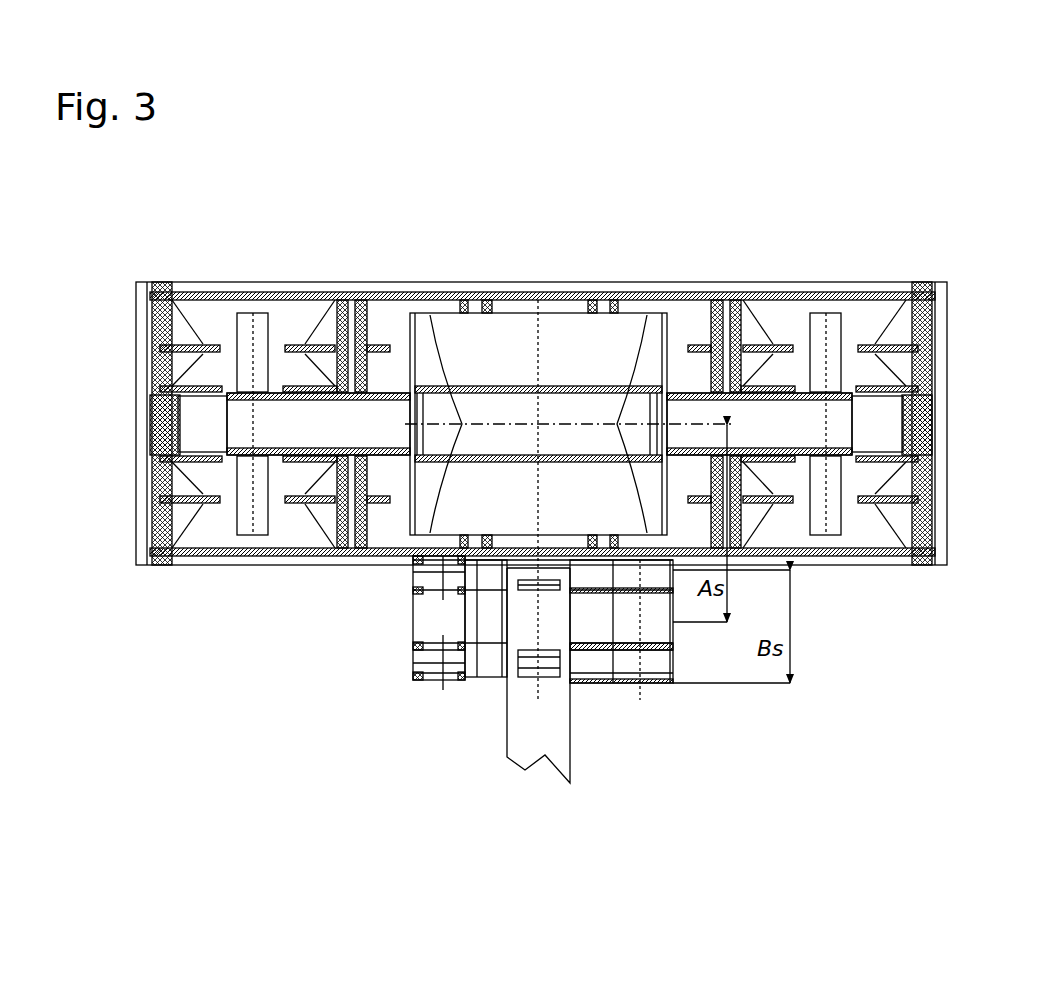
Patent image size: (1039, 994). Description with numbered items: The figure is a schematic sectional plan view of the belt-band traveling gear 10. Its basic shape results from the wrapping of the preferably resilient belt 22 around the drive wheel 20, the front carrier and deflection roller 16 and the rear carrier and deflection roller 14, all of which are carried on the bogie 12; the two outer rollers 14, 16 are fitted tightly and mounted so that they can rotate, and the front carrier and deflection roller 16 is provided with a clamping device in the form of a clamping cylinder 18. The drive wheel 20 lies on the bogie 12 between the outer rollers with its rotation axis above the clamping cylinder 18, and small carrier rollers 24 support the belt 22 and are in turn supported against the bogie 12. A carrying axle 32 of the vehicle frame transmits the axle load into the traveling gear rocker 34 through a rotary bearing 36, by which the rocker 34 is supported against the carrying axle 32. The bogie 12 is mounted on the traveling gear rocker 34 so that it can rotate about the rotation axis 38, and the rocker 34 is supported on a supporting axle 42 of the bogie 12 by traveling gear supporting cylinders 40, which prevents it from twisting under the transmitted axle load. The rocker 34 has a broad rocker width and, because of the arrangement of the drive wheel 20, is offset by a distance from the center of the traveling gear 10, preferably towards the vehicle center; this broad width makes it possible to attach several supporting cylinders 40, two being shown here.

The belt-band traveling gear 10 is at (194, 774).
The bogie 12 is at (773, 417).
The rear carrier and deflection roller 14 is at (745, 315).
The front carrier and deflection roller 16 is at (337, 322).
The clamping cylinder 18 is at (237, 318).
The drive wheel 20 is at (640, 353).
The belt 22 is at (926, 422).
The carrier rollers 24 is at (383, 308).
The carrying axle 32 is at (533, 747).
The traveling gear rocker 34 is at (602, 683).
The rotary bearing 36 is at (530, 655).
The rotation axis 38 is at (637, 545).
The traveling gear supporting cylinder 40 is at (413, 557).
The supporting axle 42 is at (415, 540).